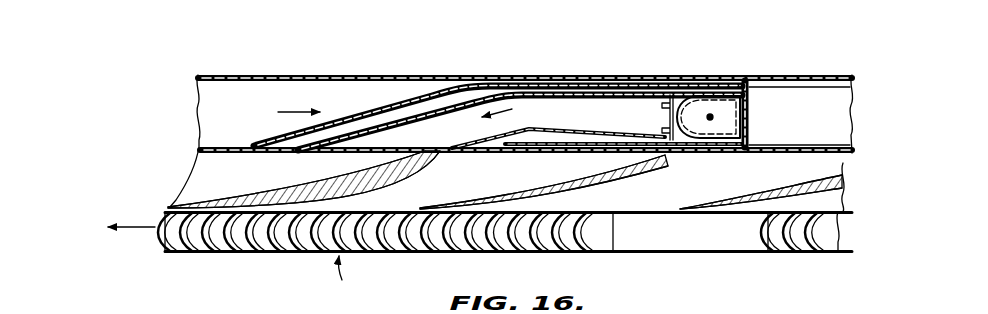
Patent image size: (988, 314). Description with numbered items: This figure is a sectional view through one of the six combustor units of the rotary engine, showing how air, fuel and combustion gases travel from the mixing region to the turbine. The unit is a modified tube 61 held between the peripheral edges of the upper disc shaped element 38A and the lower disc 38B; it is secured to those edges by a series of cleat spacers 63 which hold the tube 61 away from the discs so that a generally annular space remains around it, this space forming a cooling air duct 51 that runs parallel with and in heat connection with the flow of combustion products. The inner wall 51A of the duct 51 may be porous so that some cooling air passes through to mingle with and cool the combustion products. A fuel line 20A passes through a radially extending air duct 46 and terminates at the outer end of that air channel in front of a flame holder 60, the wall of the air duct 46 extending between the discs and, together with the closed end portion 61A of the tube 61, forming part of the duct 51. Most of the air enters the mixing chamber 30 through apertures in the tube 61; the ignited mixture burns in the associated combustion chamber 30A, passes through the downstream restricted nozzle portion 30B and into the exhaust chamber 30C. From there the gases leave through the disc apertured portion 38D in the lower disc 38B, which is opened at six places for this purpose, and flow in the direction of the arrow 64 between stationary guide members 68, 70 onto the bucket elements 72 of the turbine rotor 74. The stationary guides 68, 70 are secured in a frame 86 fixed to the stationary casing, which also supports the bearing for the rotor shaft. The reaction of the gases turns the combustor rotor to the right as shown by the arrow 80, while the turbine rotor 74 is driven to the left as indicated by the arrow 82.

The fuel line 20A is at (711, 115).
The mixing chamber 30 is at (727, 110).
The combustion chamber 30A is at (549, 95).
The nozzle portion 30B is at (531, 86).
The exhaust chamber 30C is at (440, 127).
The upper disc shaped element 38A is at (803, 82).
The lower disc 38B is at (787, 149).
The disc apertured portion 38D is at (443, 151).
The air duct 46 is at (762, 112).
The duct 51 is at (368, 127).
The inner wall of duct 51A is at (350, 117).
The flame holder 60 is at (662, 127).
The modified tube 61 is at (541, 147).
The closed end portion 61A is at (750, 112).
The cleat spacers 63 is at (617, 90).
The arrow 64 is at (512, 107).
The stationary guide member 68 is at (368, 174).
The stationary guide member 70 is at (613, 190).
The bucket elements 72 is at (284, 252).
The rotor 74 is at (354, 275).
The arrow 80 is at (295, 111).
The arrow 82 is at (150, 228).
The frame 86 is at (835, 174).